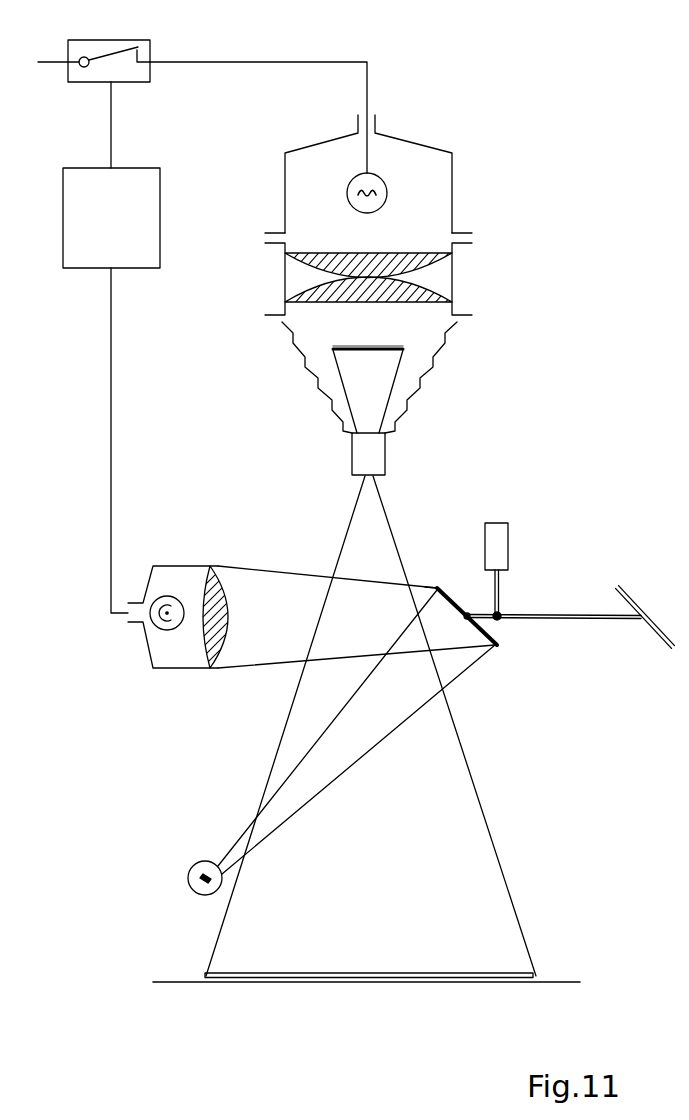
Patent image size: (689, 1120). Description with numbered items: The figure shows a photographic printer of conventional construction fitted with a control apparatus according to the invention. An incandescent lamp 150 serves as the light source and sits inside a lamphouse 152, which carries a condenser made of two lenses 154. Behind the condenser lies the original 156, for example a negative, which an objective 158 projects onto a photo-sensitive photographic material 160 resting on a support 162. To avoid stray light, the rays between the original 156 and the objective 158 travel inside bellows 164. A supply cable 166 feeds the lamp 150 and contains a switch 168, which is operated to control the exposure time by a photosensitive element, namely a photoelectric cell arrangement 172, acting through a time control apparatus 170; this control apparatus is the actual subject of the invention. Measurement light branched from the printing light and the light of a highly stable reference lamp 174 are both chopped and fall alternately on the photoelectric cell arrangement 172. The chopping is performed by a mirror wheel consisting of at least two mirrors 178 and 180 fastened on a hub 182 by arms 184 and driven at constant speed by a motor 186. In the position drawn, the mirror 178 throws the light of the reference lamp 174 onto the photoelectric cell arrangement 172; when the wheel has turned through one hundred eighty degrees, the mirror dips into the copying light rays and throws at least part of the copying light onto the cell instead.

The incandescent lamp 150 is at (371, 182).
The lamphouse 152 is at (420, 228).
The lenses 154 is at (408, 298).
The original 156 is at (403, 348).
The objective 158 is at (372, 457).
The photo-sensitive photographic material 160 is at (493, 973).
The support 162 is at (182, 977).
The bellows 164 is at (408, 409).
The supply cable 166 is at (250, 62).
The switch 168 is at (122, 42).
The time control apparatus 170 is at (133, 168).
The photoelectric cell arrangement 172 is at (177, 652).
The reference lamp 174 is at (200, 878).
The mirror 178 is at (453, 592).
The mirror 180 is at (631, 597).
The hub 182 is at (500, 590).
The arms 184 is at (563, 616).
The motor 186 is at (494, 538).